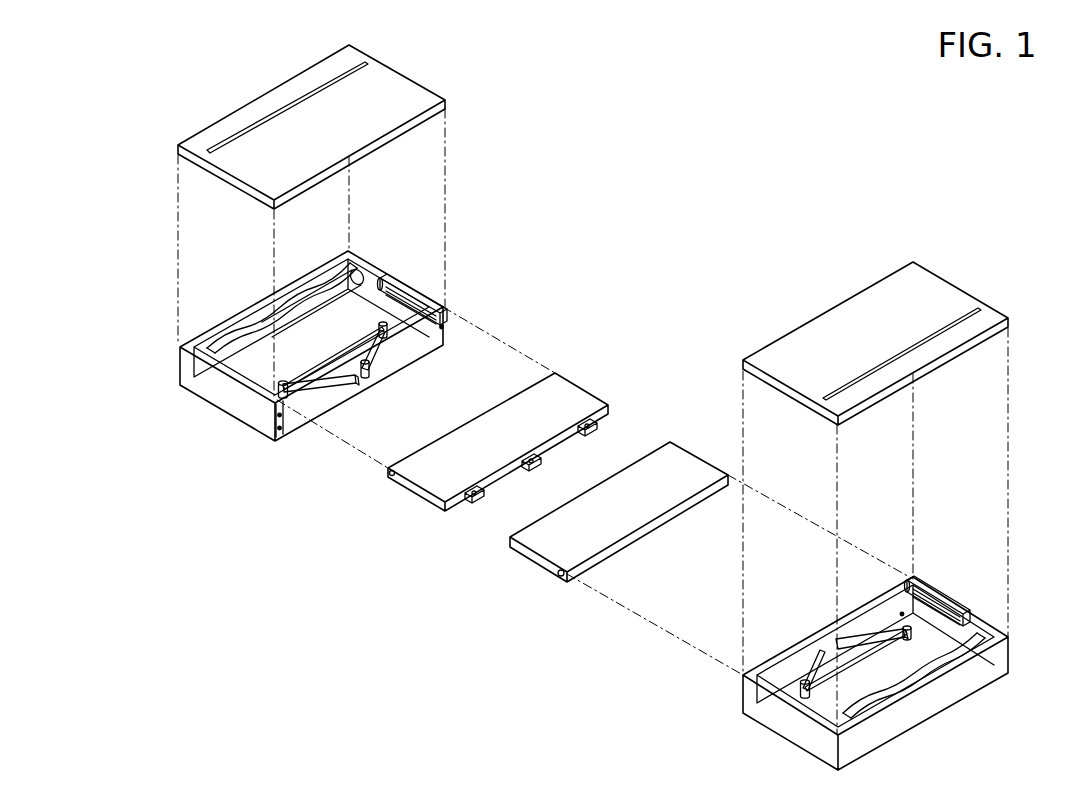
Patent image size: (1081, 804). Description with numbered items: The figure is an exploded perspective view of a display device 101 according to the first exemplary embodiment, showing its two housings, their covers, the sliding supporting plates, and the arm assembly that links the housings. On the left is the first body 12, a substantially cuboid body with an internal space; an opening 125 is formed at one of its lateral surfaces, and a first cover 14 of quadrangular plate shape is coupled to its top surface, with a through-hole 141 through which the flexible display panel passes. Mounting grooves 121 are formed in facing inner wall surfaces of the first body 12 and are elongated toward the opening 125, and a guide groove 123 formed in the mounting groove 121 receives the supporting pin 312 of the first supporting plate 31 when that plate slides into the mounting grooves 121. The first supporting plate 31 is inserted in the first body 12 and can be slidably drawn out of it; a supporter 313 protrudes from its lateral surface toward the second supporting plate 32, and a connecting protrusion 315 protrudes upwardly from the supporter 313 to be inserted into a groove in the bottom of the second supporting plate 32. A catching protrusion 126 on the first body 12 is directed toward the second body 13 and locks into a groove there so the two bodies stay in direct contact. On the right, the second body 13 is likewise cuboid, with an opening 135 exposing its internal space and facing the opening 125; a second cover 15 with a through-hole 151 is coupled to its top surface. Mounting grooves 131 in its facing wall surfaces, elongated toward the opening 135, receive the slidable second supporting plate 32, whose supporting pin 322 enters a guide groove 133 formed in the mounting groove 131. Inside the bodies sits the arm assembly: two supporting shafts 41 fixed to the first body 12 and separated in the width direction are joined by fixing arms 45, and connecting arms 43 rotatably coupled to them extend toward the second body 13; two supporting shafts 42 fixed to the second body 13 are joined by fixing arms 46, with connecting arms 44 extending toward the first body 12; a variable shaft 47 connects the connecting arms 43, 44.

The display device 101 is at (668, 177).
The first body 12 is at (187, 373).
The second body 13 is at (803, 738).
The first cover 14 is at (275, 97).
The second cover 15 is at (915, 275).
The through-hole 141 is at (228, 135).
The through-hole 151 is at (963, 308).
The mounting grooves 121 is at (390, 278).
The guide groove 123 is at (423, 292).
The opening 125 is at (313, 433).
The catching protrusion 126 is at (278, 432).
The mounting grooves 131 is at (952, 604).
The guide groove 133 is at (922, 580).
The opening 135 is at (900, 612).
The first supporting plate 31 is at (442, 483).
The supporting pin 312 is at (388, 476).
The supporter 313 is at (590, 430).
The connecting protrusion 315 is at (586, 426).
The second supporting plate 32 is at (533, 542).
The supporting pin 322 is at (557, 578).
The supporting shafts 41 is at (270, 405).
The supporting shafts 42 is at (800, 704).
The connecting arms 43 is at (320, 391).
The connecting arms 44 is at (840, 643).
The fixing arms 45 is at (343, 350).
The fixing arms 46 is at (857, 668).
The variable shaft 47 is at (369, 376).